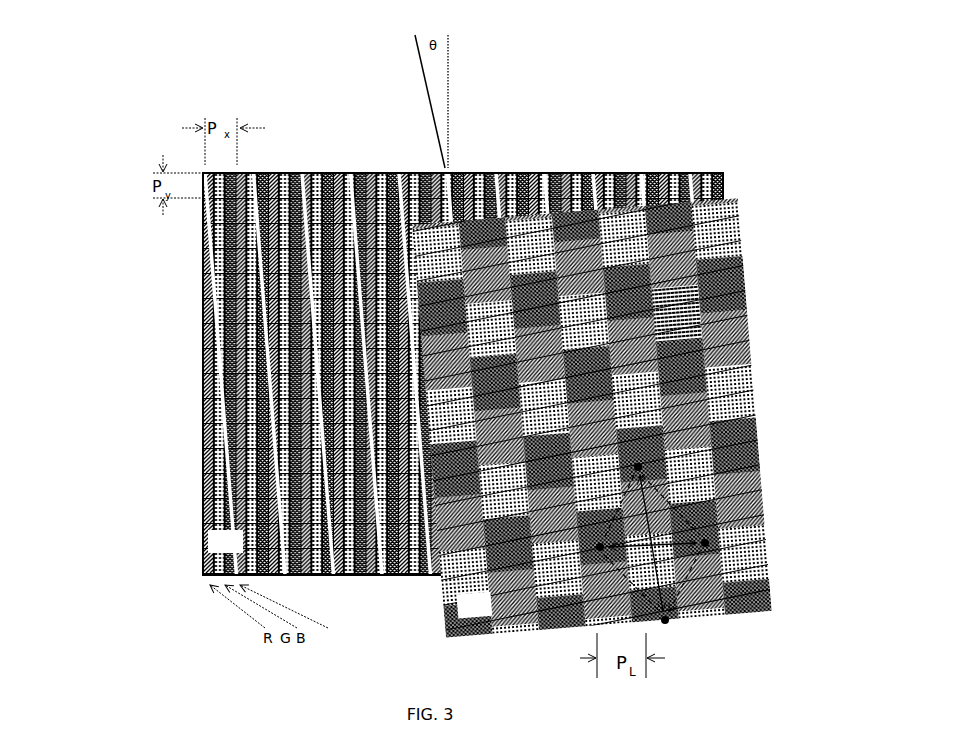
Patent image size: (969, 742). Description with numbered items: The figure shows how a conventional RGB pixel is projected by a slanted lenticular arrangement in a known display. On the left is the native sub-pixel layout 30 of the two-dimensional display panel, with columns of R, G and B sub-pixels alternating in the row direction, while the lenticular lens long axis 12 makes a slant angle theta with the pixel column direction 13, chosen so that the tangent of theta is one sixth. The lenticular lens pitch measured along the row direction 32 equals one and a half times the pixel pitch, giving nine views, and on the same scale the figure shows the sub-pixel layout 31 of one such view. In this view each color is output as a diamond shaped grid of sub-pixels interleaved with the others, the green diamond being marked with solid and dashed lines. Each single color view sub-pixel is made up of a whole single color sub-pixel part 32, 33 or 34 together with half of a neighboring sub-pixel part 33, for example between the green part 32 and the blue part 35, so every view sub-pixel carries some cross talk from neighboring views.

The lenticular lens long axis 12 is at (409, 70).
The pixel column direction 13 is at (454, 80).
The native sub-pixel layout 30 is at (177, 345).
The sub-pixel layout 31 is at (799, 507).
The single color sub-pixel part 32 is at (706, 314).
The single color sub-pixel part 33 is at (743, 280).
The single color sub-pixel part 34 is at (738, 250).
The single color sub-pixel part 35 is at (745, 380).